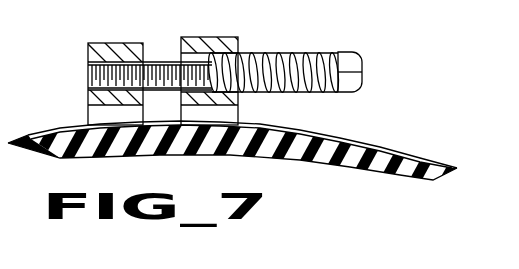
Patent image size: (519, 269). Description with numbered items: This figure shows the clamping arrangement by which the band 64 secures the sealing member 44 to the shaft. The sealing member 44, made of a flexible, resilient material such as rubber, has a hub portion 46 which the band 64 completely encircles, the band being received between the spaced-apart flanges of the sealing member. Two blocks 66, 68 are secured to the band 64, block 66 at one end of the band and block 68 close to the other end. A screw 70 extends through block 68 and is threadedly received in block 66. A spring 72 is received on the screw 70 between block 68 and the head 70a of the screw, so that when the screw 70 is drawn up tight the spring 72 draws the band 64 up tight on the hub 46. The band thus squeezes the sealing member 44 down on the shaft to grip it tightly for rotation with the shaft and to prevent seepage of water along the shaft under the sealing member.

The sealing member 44 is at (51, 163).
The hub portion 46 is at (355, 168).
The band 64 is at (340, 138).
The block 66 is at (97, 50).
The block 68 is at (238, 40).
The screw 70 is at (97, 73).
The head of the screw 70a is at (350, 62).
The spring 72 is at (287, 89).